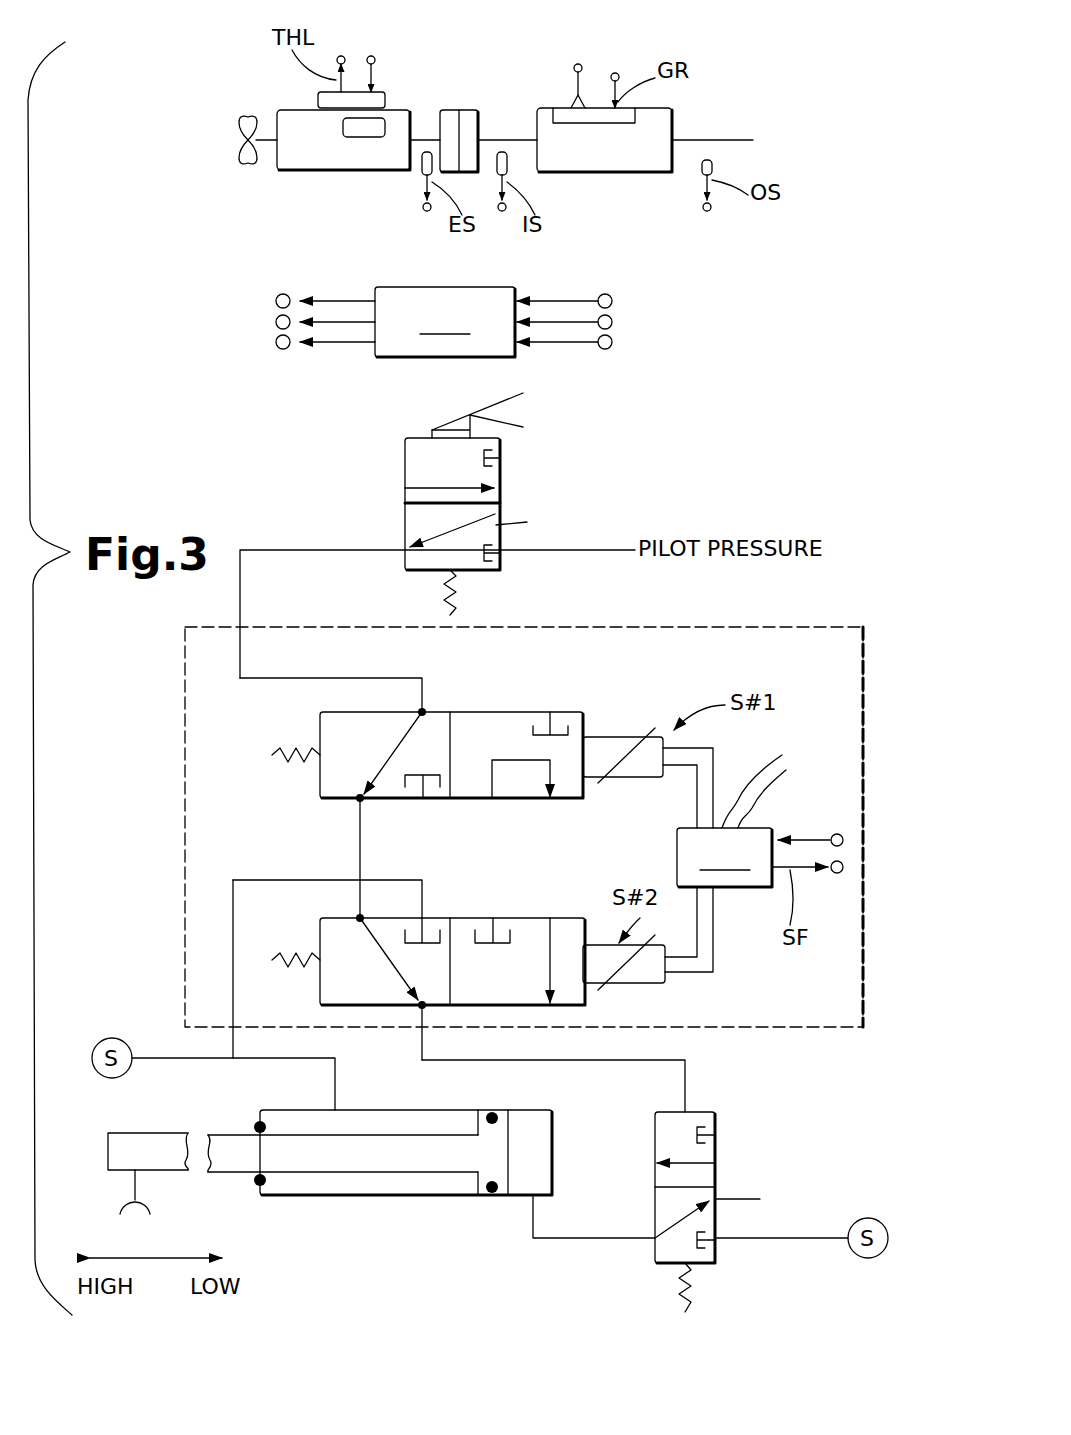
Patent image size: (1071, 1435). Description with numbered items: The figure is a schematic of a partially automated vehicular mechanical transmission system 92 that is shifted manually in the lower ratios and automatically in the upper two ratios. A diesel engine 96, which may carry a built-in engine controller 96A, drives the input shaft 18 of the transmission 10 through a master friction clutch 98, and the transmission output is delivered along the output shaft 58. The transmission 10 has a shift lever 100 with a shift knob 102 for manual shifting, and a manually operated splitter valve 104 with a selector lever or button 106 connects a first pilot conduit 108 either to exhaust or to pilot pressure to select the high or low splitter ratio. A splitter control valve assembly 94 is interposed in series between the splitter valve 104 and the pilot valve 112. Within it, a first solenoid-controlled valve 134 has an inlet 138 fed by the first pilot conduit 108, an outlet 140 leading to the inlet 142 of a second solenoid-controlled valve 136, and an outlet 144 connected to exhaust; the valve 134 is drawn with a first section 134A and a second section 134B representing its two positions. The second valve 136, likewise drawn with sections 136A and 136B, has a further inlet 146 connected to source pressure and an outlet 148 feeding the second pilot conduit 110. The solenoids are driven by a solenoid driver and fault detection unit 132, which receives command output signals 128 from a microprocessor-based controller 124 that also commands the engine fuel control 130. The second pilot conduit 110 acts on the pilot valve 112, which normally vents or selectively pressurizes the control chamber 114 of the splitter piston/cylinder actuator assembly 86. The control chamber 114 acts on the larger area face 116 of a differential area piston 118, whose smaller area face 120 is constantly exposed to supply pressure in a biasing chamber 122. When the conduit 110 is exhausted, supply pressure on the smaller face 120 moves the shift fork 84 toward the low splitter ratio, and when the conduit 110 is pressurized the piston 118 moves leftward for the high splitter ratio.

The transmission 10 is at (598, 172).
The input shaft 18 is at (500, 138).
The output shaft 58 is at (704, 140).
The shift fork 84 is at (138, 1188).
The splitter piston/cylinder actuator assembly 86 is at (421, 1163).
The partially automated vehicular mechanical transmission system 92 is at (812, 168).
The splitter control valve assembly 94 is at (796, 622).
The diesel engine 96 is at (302, 148).
The engine controller 96A is at (365, 130).
The master friction clutch 98 is at (459, 106).
The shift lever 100 is at (573, 80).
The shift knob 102 is at (582, 66).
The manually operated splitter valve 104 is at (458, 493).
The selector lever or button 106 is at (502, 402).
The first pilot conduit 108 is at (366, 548).
The second pilot conduit 110 is at (688, 1088).
The pilot valve 112 is at (752, 1152).
The control chamber 114 is at (537, 1137).
The larger area face 116 is at (514, 1200).
The differential area piston 118 is at (480, 1186).
The smaller area face 120 is at (478, 1120).
The biasing chamber 122 is at (322, 1185).
The controller 124 is at (444, 322).
The command output signals 128 is at (339, 298).
The engine fuel control 130 is at (328, 100).
The solenoid driver and fault detection unit 132 is at (760, 821).
The first solenoid-controlled valve 134 is at (462, 720).
The first valve section 134A is at (338, 745).
The second valve section 134B is at (572, 722).
The second solenoid-controlled valve 136 is at (441, 915).
The first valve section 136A is at (368, 932).
The second valve section 136B is at (523, 940).
The inlet 138 is at (426, 708).
The outlet 140 is at (357, 800).
The inlet 142 is at (357, 917).
The outlet 144 is at (428, 790).
The inlet 146 is at (426, 915).
The outlet 148 is at (420, 1010).